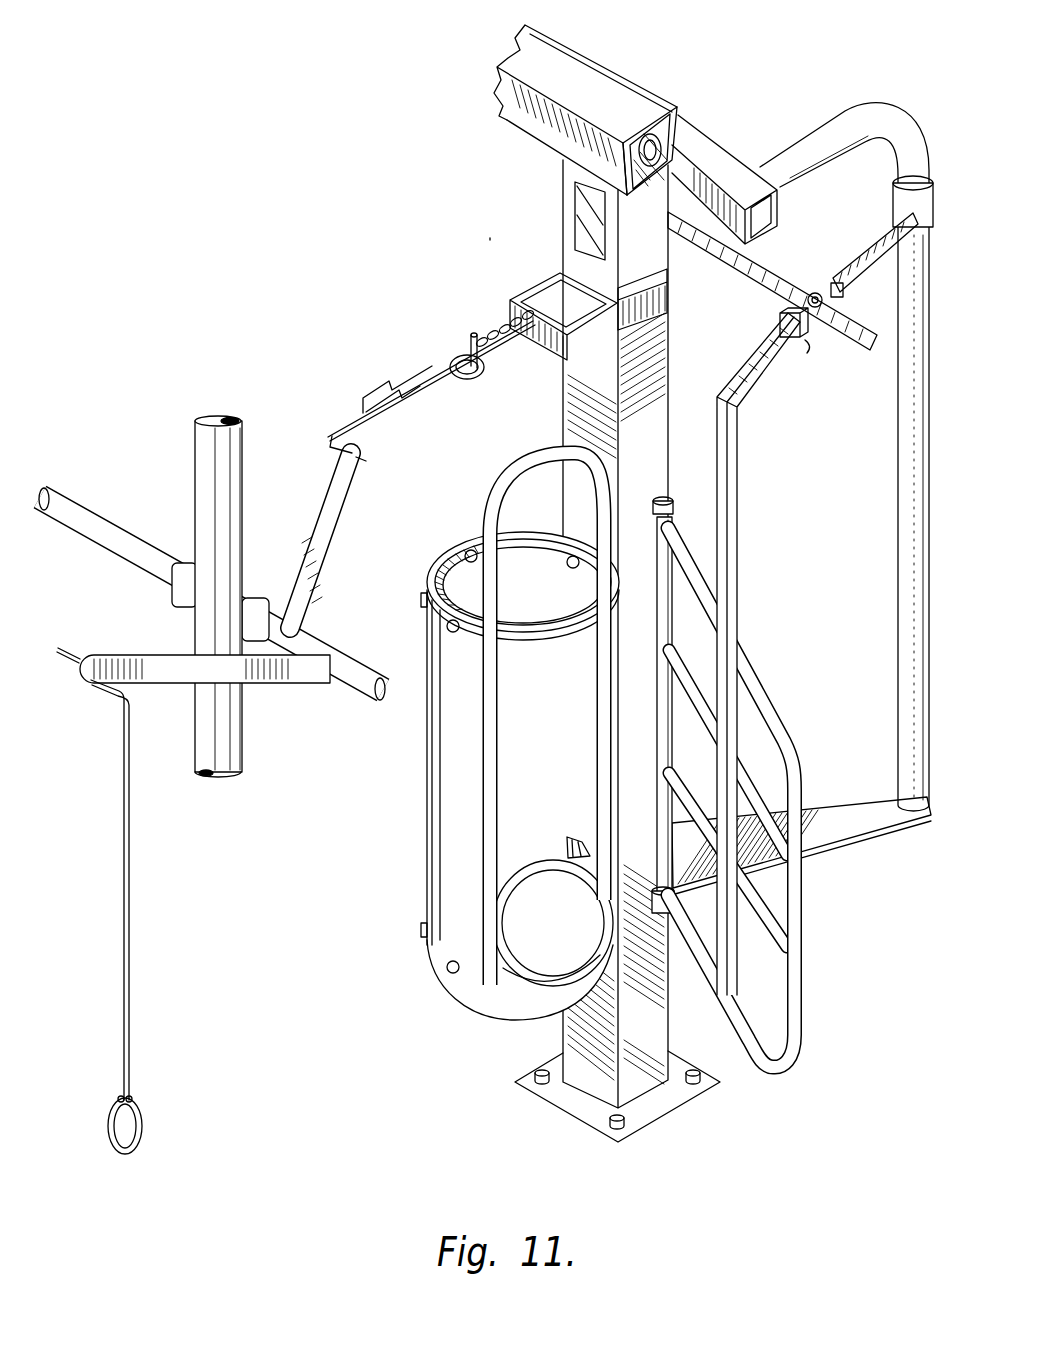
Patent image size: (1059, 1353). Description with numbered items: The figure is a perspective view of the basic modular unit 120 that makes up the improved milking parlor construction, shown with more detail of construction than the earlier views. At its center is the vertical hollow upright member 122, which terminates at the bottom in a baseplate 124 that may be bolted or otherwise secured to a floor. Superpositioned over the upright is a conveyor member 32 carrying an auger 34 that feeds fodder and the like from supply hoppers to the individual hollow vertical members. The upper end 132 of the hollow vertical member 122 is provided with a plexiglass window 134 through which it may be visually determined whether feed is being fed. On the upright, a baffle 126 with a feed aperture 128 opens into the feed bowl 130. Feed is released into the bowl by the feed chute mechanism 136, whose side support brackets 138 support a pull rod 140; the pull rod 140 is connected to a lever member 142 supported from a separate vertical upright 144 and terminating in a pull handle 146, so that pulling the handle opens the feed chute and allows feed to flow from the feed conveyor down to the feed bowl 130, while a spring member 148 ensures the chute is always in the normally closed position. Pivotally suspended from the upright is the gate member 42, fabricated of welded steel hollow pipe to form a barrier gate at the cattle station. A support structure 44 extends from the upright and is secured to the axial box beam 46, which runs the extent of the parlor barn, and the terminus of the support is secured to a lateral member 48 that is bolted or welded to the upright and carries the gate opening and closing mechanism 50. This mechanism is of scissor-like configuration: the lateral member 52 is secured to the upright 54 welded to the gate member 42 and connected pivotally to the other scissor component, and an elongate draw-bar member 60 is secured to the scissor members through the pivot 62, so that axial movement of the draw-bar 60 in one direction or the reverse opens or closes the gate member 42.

The conveyor member 32 is at (587, 52).
The auger 34 is at (678, 118).
The gate member 42 is at (757, 680).
The support structure 44 is at (867, 117).
The axial box beam 46 is at (702, 167).
The lateral member 48 is at (854, 822).
The gate opening and closing mechanism 50 is at (825, 338).
The lateral member 52 is at (890, 230).
The upright 54 is at (748, 395).
The draw-bar member 60 is at (742, 268).
The pivot 62 is at (815, 297).
The basic modular unit 120 is at (489, 235).
The vertical hollow upright member 122 is at (653, 1043).
The baseplate 124 is at (687, 1090).
The baffle 126 is at (588, 850).
The feed aperture 128 is at (567, 850).
The feed bowl 130 is at (510, 1005).
The upper end 132 is at (570, 160).
The plexiglass window 134 is at (590, 217).
The feed chute mechanism 136 is at (503, 292).
The side support brackets 138 is at (662, 300).
The pull rod 140 is at (507, 356).
The lever member 142 is at (330, 520).
The vertical upright 144 is at (215, 627).
The pull handle 146 is at (128, 885).
The spring member 148 is at (487, 340).